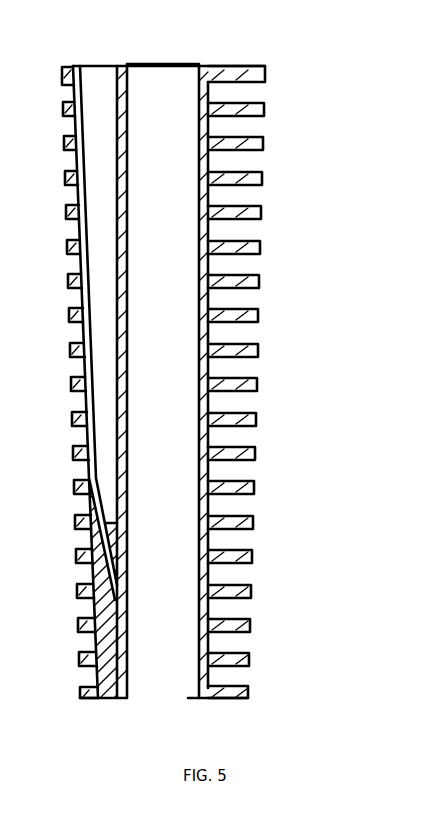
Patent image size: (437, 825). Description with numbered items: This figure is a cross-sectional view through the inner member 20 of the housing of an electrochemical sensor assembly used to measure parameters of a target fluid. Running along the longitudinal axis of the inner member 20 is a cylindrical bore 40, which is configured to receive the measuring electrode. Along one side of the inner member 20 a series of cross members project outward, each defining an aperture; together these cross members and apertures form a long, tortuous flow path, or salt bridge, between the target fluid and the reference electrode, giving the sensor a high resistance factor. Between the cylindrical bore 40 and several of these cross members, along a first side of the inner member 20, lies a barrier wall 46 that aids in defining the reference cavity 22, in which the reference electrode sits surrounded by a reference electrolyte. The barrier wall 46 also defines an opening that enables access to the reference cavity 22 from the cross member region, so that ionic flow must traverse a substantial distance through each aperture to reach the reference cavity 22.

The inner member 20 is at (366, 59).
The reference cavity 22 is at (104, 152).
The cylindrical bore 40 is at (122, 210).
The barrier wall 46 is at (88, 283).